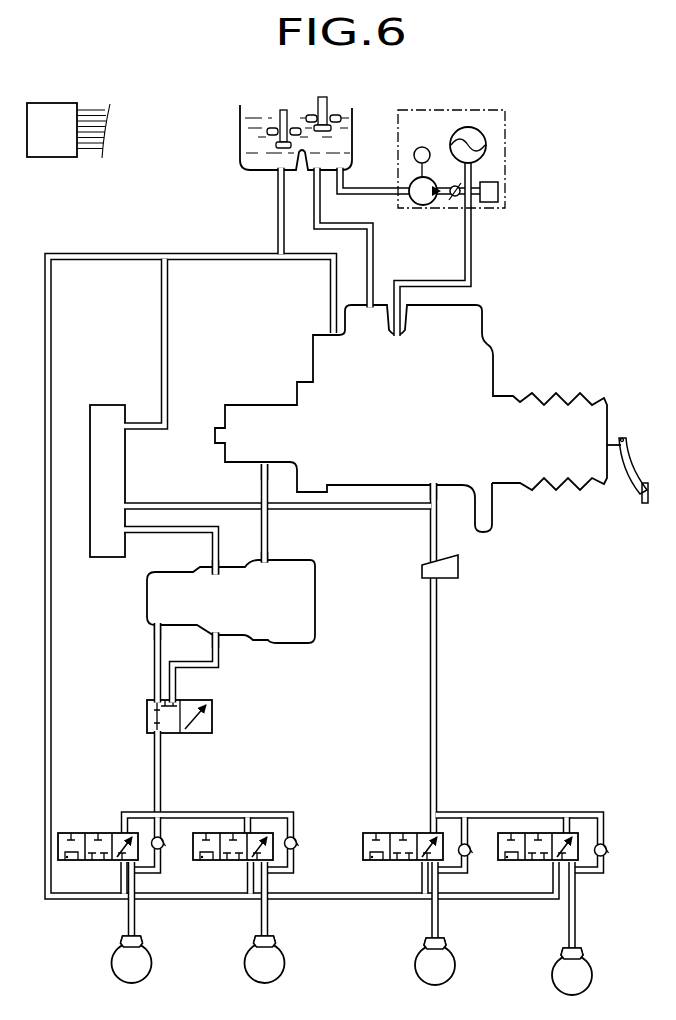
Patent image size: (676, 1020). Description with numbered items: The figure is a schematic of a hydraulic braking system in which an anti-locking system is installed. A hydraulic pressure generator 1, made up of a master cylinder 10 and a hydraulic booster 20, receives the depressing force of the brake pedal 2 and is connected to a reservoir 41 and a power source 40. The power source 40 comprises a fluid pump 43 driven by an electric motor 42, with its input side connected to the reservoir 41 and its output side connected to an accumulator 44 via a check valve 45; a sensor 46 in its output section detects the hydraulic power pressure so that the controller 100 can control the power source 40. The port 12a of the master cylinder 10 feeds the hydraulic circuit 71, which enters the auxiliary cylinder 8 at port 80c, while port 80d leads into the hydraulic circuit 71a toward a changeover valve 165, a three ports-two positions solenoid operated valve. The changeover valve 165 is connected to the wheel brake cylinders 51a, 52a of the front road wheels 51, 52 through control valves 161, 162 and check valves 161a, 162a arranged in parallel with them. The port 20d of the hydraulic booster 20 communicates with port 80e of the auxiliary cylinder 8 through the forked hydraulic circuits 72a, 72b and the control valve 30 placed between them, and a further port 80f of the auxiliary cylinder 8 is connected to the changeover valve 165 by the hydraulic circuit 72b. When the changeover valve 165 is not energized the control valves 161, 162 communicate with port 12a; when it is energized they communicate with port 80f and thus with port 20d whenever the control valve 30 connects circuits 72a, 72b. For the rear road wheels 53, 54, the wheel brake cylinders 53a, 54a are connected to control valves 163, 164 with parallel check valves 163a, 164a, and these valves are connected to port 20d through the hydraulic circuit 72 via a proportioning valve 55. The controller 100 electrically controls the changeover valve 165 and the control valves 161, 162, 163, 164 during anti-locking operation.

The hydraulic pressure generator 1 is at (431, 408).
The brake pedal 2 is at (632, 494).
The auxiliary cylinder 8 is at (319, 604).
The master cylinder 10 is at (246, 402).
The port 12a is at (261, 468).
The hydraulic booster 20 is at (487, 331).
The port 20d is at (429, 498).
The control valve 30 is at (126, 472).
The power source 40 is at (483, 166).
The reservoir 41 is at (240, 153).
The electric motor 42 is at (422, 146).
The fluid pump 43 is at (417, 206).
The accumulator 44 is at (469, 128).
The check valve 45 is at (453, 198).
The sensor 46 is at (498, 194).
The front road wheel 51 is at (151, 965).
The wheel brake cylinder 51a is at (142, 940).
The front road wheel 52 is at (284, 965).
The wheel brake cylinder 52a is at (275, 940).
The rear road wheel 53 is at (455, 967).
The wheel brake cylinder 53a is at (446, 942).
The rear road wheel 54 is at (591, 975).
The wheel brake cylinder 54a is at (583, 952).
The proportioning valve 55 is at (452, 579).
The hydraulic circuit 71 is at (269, 531).
The hydraulic circuit 71a is at (152, 663).
The hydraulic circuit 72 is at (438, 541).
The hydraulic circuit 72a is at (362, 512).
The hydraulic circuit 72b is at (200, 534).
The port 80c is at (270, 560).
The port 80d is at (152, 630).
The port 80e is at (222, 563).
The port 80f is at (220, 641).
The controller 100 is at (62, 158).
The control valve 161 is at (106, 830).
The check valve 161a is at (165, 849).
The control valve 162 is at (245, 830).
The check valve 162a is at (297, 849).
The control valve 163 is at (412, 830).
The check valve 163a is at (472, 855).
The control valve 164 is at (543, 830).
The check valve 164a is at (606, 855).
The changeover valve 165 is at (213, 722).